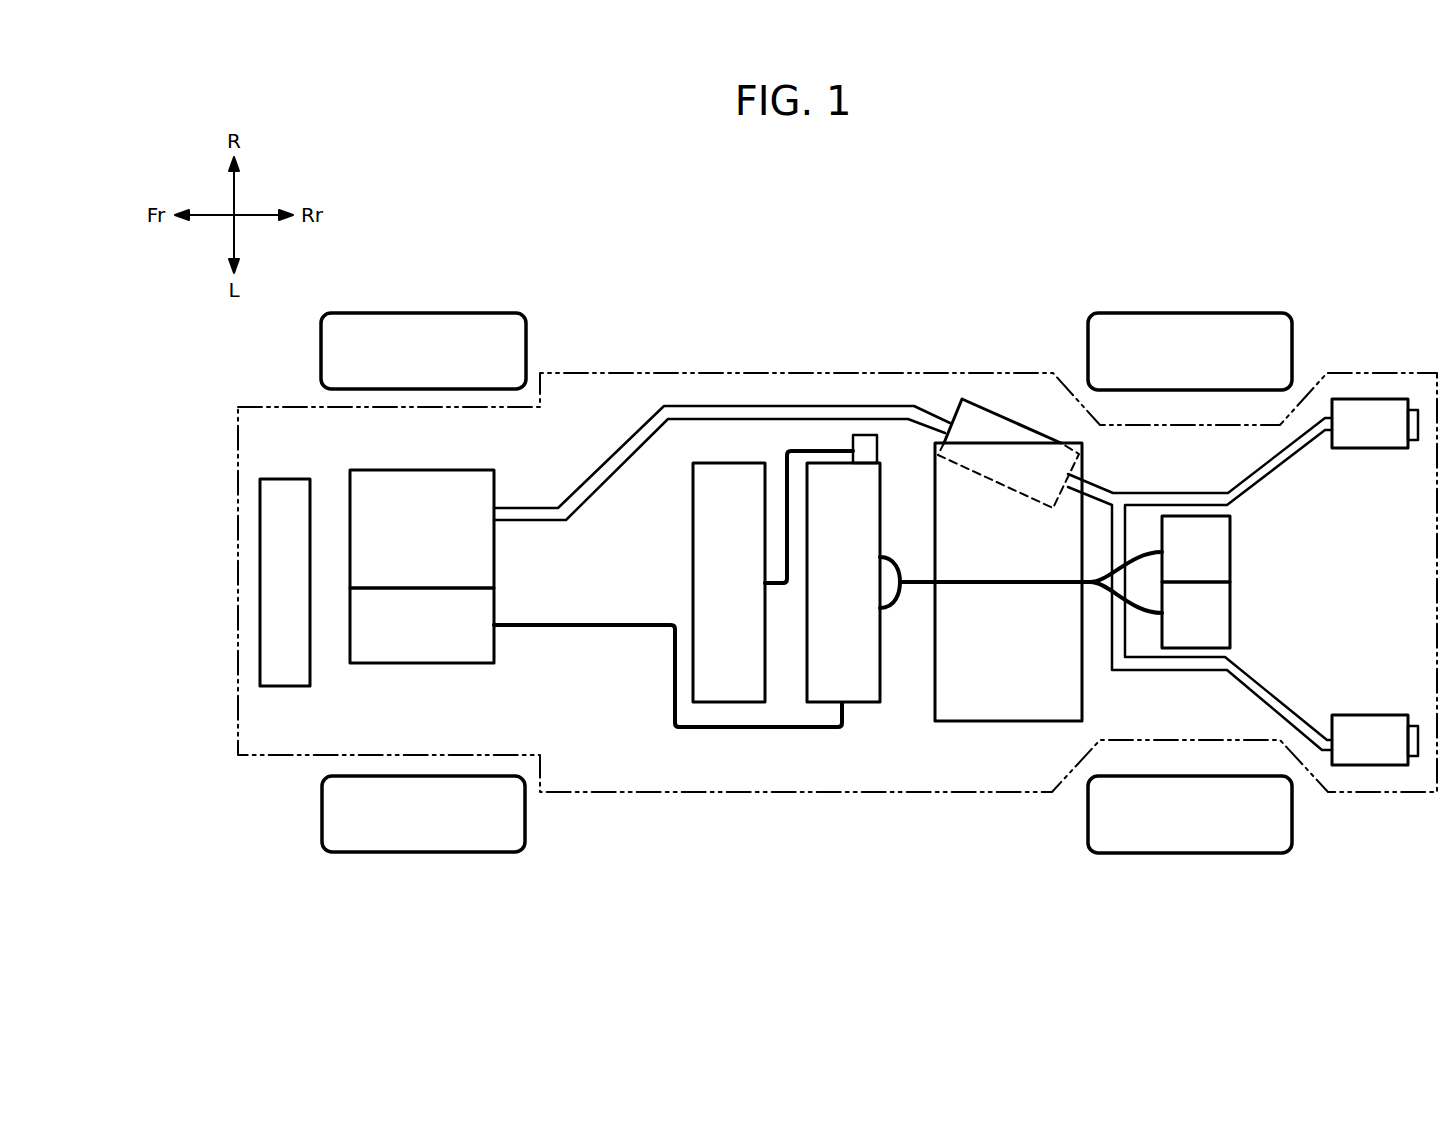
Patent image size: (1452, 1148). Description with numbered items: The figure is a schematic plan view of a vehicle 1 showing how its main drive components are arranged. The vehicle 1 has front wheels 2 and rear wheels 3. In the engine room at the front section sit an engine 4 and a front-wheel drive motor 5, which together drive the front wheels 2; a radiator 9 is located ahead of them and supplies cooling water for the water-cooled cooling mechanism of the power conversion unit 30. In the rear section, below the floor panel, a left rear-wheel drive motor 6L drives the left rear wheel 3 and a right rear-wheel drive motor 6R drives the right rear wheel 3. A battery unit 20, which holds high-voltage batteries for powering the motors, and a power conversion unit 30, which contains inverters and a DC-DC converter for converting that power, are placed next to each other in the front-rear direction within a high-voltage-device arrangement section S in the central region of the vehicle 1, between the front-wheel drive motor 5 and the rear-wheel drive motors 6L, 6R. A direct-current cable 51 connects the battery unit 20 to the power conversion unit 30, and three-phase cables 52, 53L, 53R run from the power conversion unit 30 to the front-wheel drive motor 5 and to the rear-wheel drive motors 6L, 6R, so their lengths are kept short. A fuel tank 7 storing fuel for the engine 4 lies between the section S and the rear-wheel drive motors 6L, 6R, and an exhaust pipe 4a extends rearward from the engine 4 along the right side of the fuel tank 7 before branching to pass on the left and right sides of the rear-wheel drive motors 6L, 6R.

The vehicle 1 is at (1250, 291).
The front wheels 2 is at (418, 330).
The rear wheels 3 is at (1190, 322).
The engine 4 is at (378, 540).
The exhaust pipe 4a is at (630, 445).
The front-wheel drive motor 5 is at (378, 635).
The right rear-wheel drive motor 6R is at (1223, 547).
The left rear-wheel drive motor 6L is at (1223, 620).
The fuel tank 7 is at (992, 693).
The radiator 9 is at (280, 580).
The battery unit 20 is at (735, 683).
The power conversion unit 30 is at (858, 683).
The direct-current cable 51 is at (815, 450).
The three-phase cable 52 is at (790, 730).
The three-phase cable 53R is at (1145, 550).
The three-phase cable 53L is at (1147, 614).
The high-voltage-device arrangement section S is at (762, 438).